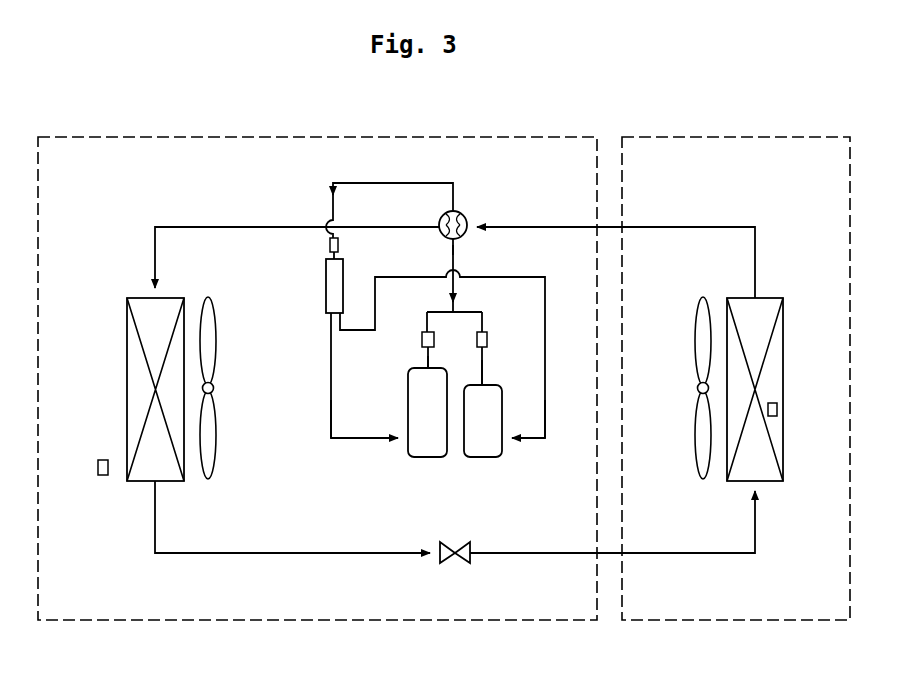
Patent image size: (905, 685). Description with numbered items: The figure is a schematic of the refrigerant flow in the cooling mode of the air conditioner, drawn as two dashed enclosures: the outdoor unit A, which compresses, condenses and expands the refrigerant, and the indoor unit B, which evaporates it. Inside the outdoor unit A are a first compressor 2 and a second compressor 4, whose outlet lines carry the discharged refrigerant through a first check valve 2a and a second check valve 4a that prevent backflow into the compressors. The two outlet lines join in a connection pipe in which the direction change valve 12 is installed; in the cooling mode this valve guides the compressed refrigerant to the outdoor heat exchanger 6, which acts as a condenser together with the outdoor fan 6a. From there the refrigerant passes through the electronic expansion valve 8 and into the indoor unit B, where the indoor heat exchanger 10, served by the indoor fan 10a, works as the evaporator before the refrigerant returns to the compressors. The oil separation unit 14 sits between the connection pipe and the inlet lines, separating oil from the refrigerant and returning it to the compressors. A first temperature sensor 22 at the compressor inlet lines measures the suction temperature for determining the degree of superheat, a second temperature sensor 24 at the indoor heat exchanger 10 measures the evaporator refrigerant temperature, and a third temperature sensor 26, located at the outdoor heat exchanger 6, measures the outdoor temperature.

The first compressor 2 is at (428, 457).
The first check valve 2a is at (422, 341).
The second compressor 4 is at (483, 457).
The second check valve 4a is at (488, 340).
The outdoor heat exchanger 6 is at (127, 367).
The outdoor fan 6a is at (218, 340).
The electronic expansion valve 8 is at (454, 565).
The indoor heat exchanger 10 is at (785, 362).
The indoor fan 10a is at (694, 344).
The direction change valve 12 is at (480, 204).
The oil separation unit 14 is at (326, 289).
The first temperature sensor 22 is at (329, 245).
The second temperature sensor 24 is at (779, 408).
The third temperature sensor 26 is at (98, 467).
The outdoor unit A is at (307, 137).
The indoor unit B is at (734, 137).